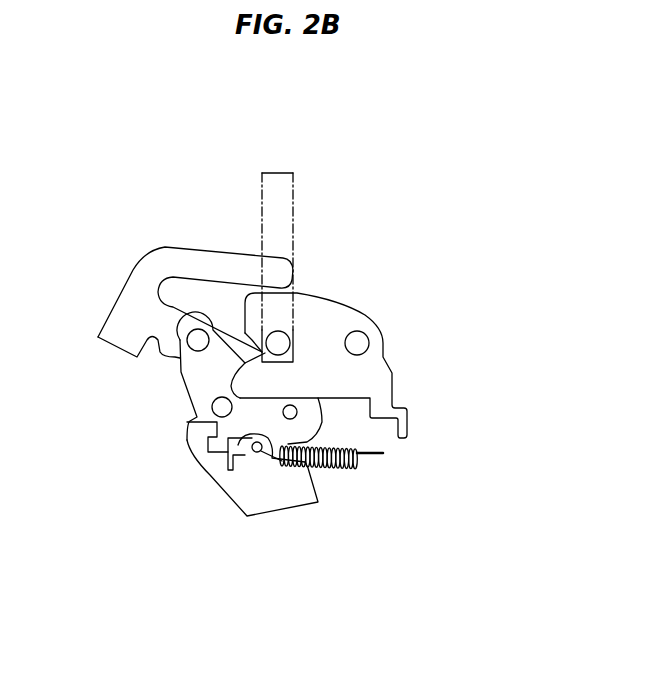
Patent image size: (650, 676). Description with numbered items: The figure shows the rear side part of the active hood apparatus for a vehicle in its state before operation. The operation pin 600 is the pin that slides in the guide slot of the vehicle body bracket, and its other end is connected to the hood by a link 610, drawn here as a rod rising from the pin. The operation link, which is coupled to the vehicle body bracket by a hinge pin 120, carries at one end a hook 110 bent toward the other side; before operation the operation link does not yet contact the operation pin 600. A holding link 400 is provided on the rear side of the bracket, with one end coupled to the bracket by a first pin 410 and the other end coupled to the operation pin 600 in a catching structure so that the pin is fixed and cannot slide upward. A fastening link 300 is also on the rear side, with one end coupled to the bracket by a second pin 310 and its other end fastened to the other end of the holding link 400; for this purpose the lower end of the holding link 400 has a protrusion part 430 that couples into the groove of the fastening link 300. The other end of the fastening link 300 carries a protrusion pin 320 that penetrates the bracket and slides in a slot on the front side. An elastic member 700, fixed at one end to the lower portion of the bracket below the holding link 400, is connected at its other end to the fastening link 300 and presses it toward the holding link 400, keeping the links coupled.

The hook 110 is at (218, 262).
The hinge pin 120 is at (293, 412).
The fastening link 300 is at (153, 410).
The second pin 310 is at (197, 340).
The protrusion pin 320 is at (218, 407).
The holding link 400 is at (378, 392).
The first pin 410 is at (357, 343).
The protrusion part 430 is at (233, 440).
The operation pin 600 is at (280, 342).
The link 610 is at (278, 173).
The elastic member 700 is at (333, 460).